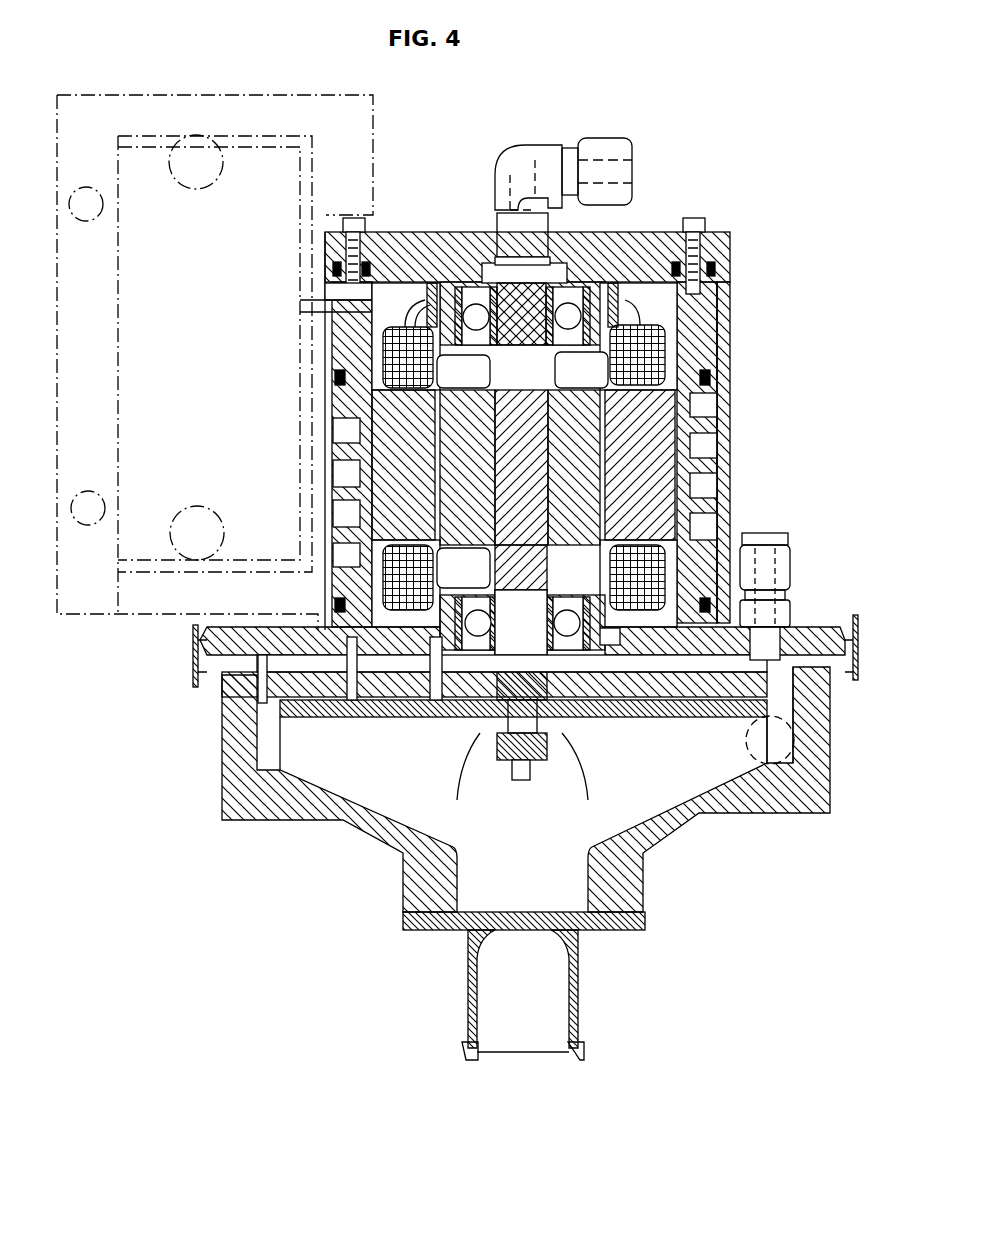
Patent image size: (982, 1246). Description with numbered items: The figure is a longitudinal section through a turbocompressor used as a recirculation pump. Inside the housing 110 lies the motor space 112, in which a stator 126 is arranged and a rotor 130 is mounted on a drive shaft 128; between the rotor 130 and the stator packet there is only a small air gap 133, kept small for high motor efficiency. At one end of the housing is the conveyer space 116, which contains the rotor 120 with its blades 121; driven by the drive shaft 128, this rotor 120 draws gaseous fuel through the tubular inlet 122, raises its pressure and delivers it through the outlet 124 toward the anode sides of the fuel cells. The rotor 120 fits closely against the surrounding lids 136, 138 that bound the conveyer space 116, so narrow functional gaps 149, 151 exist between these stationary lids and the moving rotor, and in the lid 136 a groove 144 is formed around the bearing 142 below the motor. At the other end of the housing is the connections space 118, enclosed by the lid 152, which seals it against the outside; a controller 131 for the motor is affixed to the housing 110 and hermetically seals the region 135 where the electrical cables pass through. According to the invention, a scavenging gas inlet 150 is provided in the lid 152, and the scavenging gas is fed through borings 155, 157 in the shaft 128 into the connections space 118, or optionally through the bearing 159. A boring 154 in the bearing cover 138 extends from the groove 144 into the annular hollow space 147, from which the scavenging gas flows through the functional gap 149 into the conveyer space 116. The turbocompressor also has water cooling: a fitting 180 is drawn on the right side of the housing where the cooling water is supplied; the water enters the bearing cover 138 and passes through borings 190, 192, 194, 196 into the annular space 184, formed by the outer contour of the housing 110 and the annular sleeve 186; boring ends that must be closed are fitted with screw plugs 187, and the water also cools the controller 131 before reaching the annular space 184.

The housing 110 is at (722, 323).
The motor space 112 is at (726, 291).
The conveyer space 116 is at (650, 850).
The connections space 118 is at (395, 270).
The rotor 120 is at (568, 810).
The blades 121 is at (400, 835).
The tubular inlet 122 is at (552, 1045).
The outlet 124 is at (795, 760).
The stator 126 is at (665, 360).
The drive shaft 128 is at (520, 570).
The rotor 130 is at (432, 462).
The controller 131 is at (256, 148).
The air gap 133 is at (612, 495).
The region 135 is at (330, 318).
The lid 136 is at (700, 825).
The lid 138 is at (790, 680).
The bearing 142 is at (338, 606).
The groove 144 is at (720, 560).
The annular hollow space 147 is at (326, 717).
The functional gap 149 is at (258, 690).
The scavenging gas inlet 150 is at (515, 175).
The functional gap 151 is at (355, 822).
The lid 152 is at (660, 250).
The boring 154 is at (436, 700).
The boring 155 is at (530, 368).
The boring 157 is at (520, 368).
The bearing 159 is at (476, 300).
The fitting 180 is at (790, 560).
The annular space 184 is at (345, 428).
The annular sleeve 186 is at (722, 405).
The screw plugs 187 is at (258, 670).
The boring 190 is at (760, 655).
The boring 192 is at (570, 718).
The boring 194 is at (290, 640).
The boring 196 is at (360, 600).